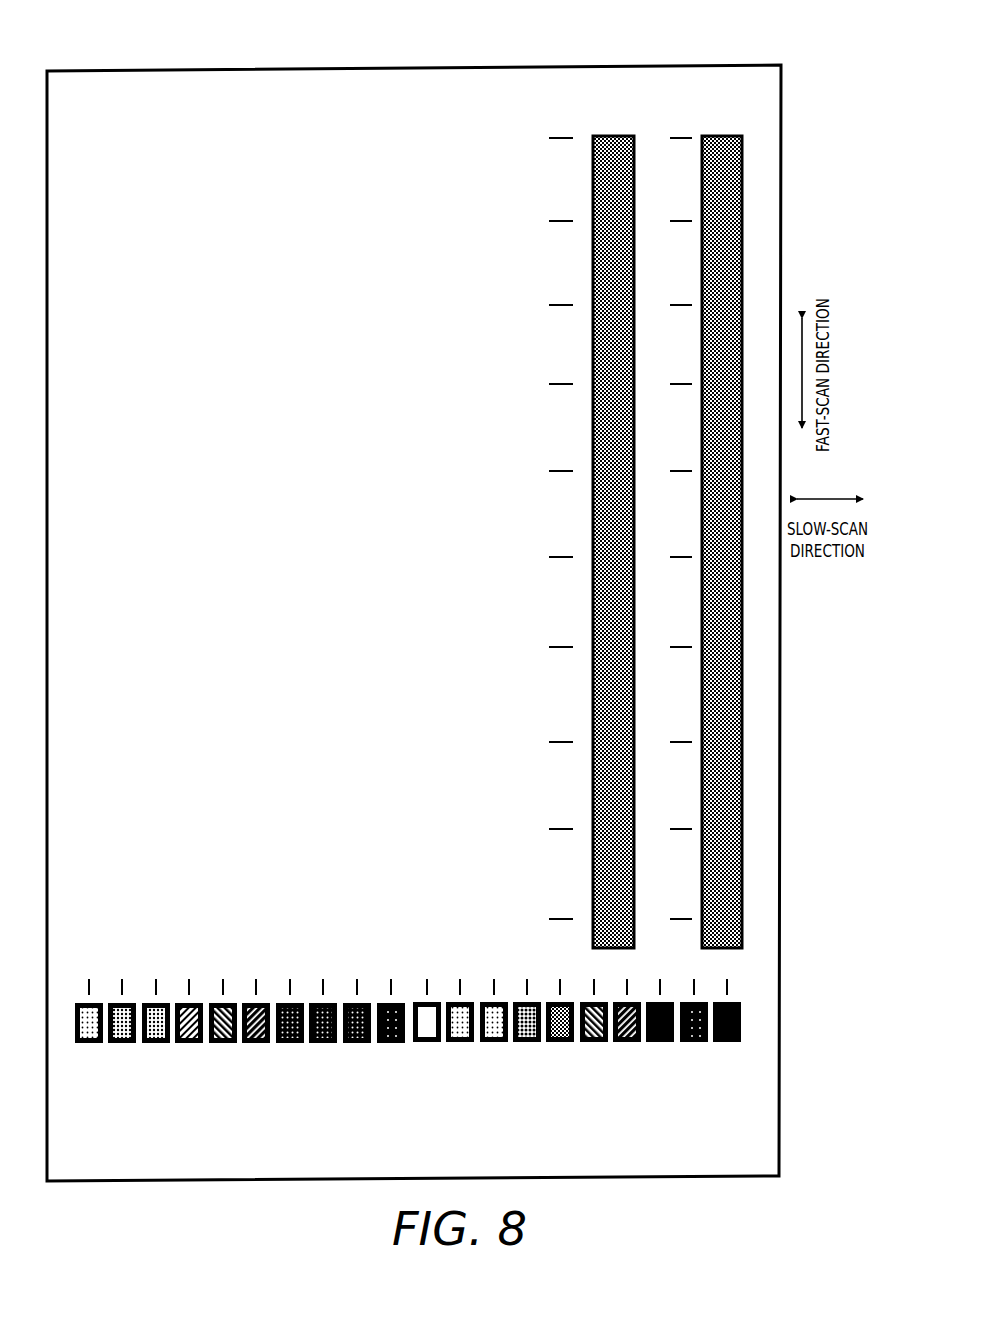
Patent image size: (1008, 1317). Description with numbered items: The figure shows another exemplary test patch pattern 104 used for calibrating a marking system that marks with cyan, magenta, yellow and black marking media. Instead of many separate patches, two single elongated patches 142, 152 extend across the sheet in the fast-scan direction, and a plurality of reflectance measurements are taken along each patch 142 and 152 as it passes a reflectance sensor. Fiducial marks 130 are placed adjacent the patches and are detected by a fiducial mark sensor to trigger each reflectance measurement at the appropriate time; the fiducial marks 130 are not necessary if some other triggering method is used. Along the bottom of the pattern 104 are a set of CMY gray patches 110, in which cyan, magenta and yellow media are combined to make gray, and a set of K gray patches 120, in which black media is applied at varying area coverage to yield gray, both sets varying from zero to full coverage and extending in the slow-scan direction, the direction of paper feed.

The test patch pattern 104 is at (548, 66).
The elongated patch 142 is at (593, 185).
The elongated patch 152 is at (742, 183).
The fiducial marks 130 is at (532, 471).
The CMY gray patches 110 is at (407, 1050).
The K gray patches 120 is at (747, 1048).